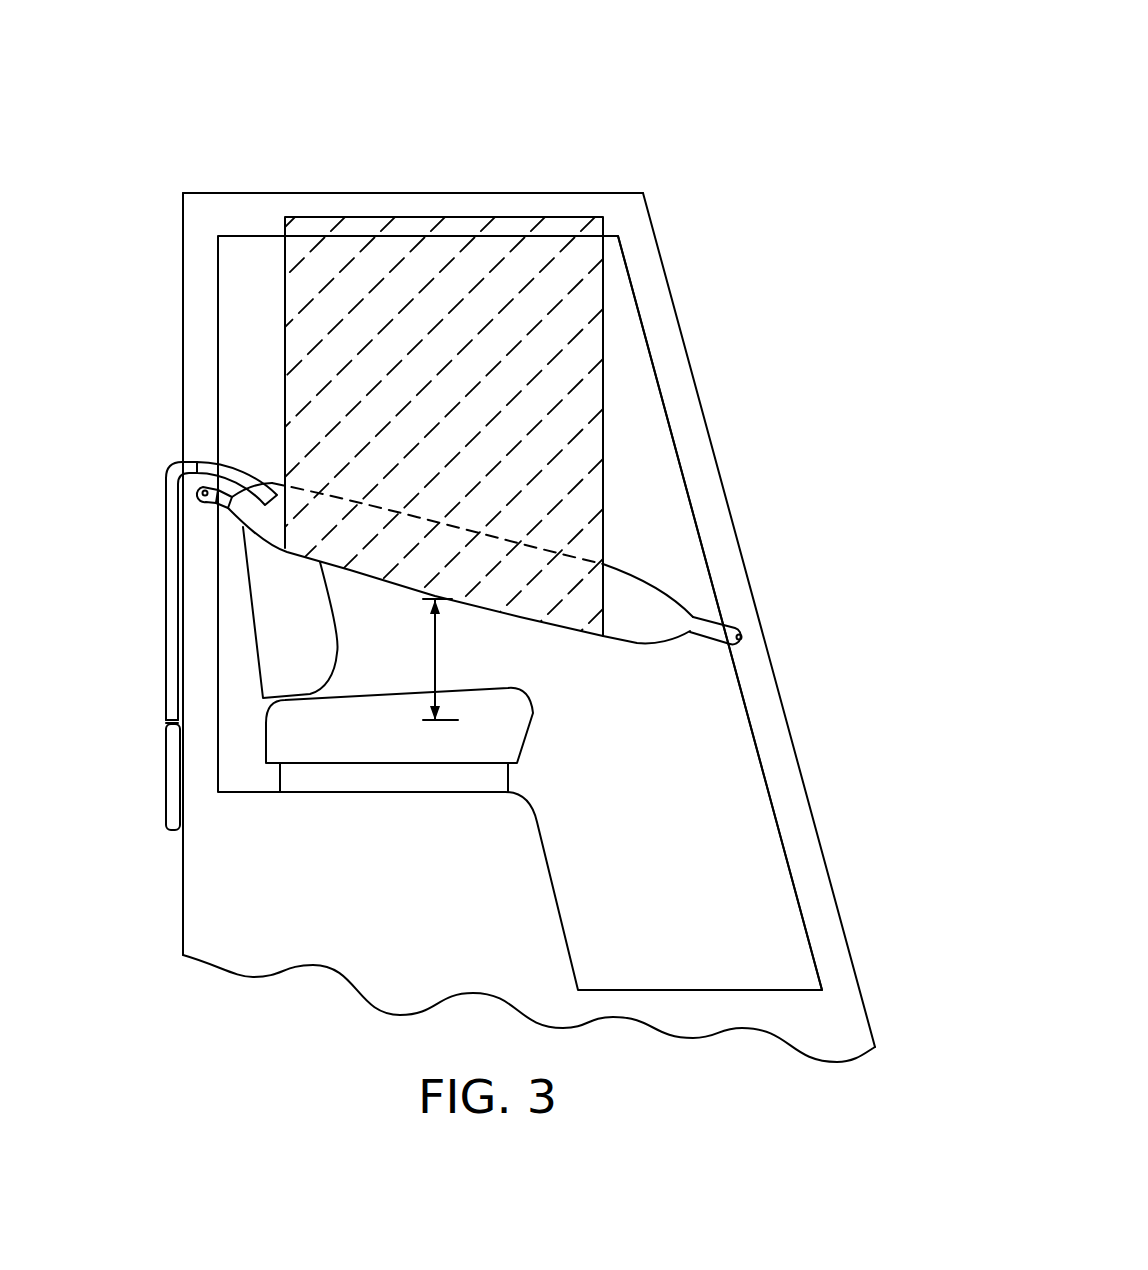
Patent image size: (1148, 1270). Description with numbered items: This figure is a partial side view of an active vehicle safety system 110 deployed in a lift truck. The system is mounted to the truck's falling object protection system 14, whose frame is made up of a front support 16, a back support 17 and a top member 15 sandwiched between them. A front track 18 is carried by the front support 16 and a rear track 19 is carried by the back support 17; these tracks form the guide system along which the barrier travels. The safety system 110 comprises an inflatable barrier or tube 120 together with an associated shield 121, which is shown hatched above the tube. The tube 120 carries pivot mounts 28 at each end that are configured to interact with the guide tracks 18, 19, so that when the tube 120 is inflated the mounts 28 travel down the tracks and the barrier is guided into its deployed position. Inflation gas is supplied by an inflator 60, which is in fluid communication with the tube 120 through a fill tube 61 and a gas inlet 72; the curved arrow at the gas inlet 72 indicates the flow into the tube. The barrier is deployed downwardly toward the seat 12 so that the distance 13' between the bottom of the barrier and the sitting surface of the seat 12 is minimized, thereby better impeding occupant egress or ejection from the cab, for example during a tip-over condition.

The vehicle safety system 110 is at (678, 100).
The falling object protection system 14 is at (476, 587).
The top member 15 is at (387, 203).
The back support 17 is at (183, 268).
The rear track 19 is at (197, 345).
The front support 16 is at (687, 347).
The front track 18 is at (707, 488).
The shield 121 is at (593, 295).
The inflatable barrier or tube 120 is at (633, 633).
The pivot mount 28 is at (198, 493).
The gas inlet 72 is at (232, 472).
The fill tube 61 is at (172, 600).
The inflator 60 is at (172, 768).
The seat 12 is at (399, 741).
The distance 13' is at (467, 659).